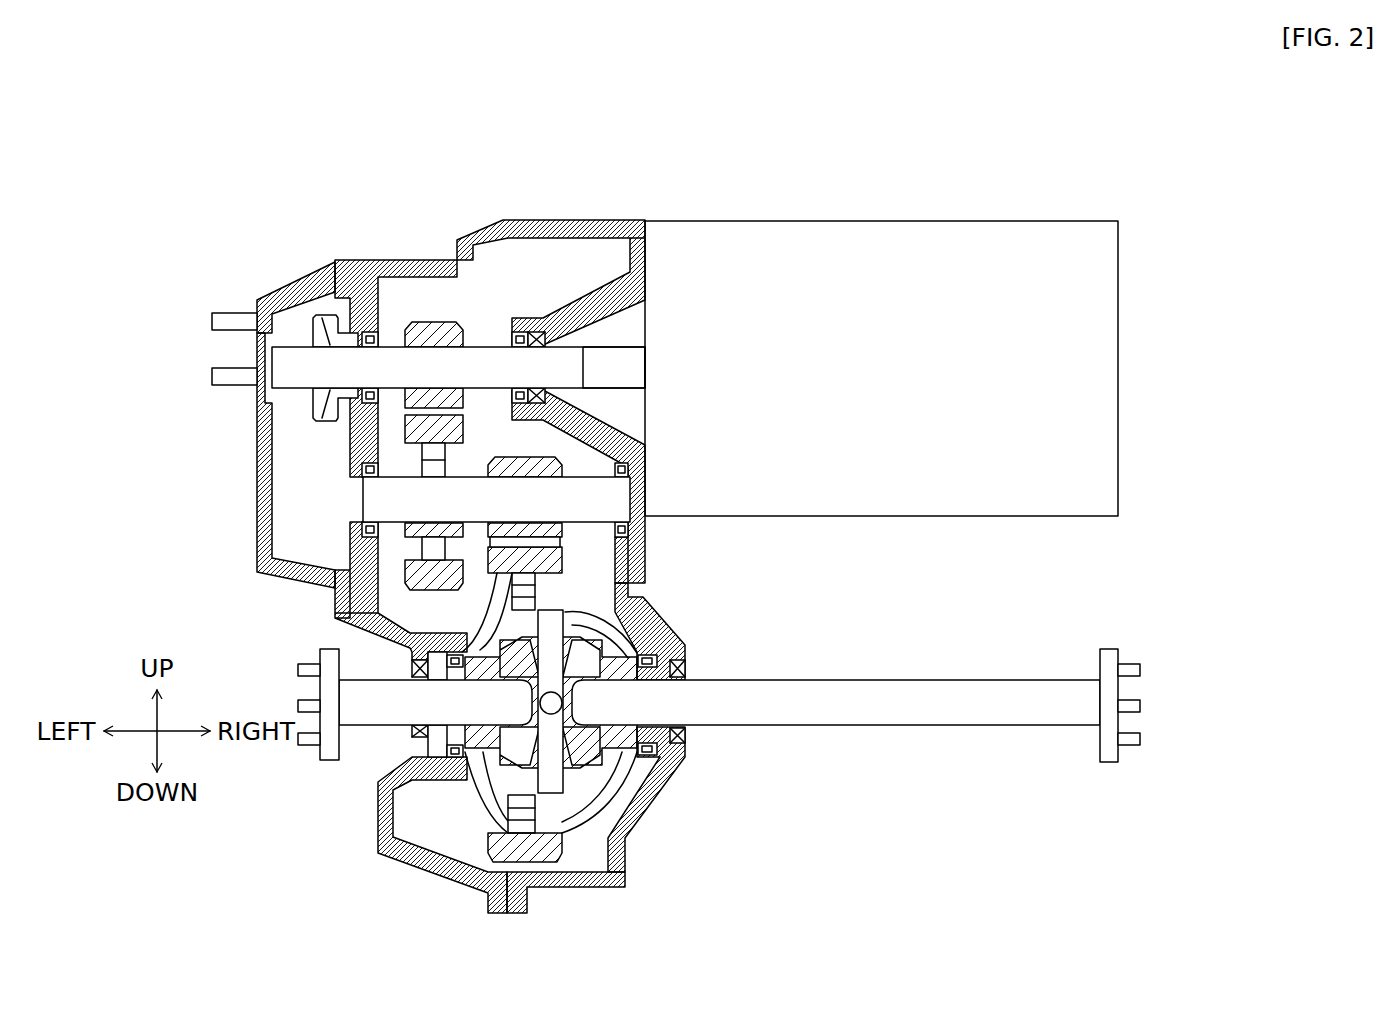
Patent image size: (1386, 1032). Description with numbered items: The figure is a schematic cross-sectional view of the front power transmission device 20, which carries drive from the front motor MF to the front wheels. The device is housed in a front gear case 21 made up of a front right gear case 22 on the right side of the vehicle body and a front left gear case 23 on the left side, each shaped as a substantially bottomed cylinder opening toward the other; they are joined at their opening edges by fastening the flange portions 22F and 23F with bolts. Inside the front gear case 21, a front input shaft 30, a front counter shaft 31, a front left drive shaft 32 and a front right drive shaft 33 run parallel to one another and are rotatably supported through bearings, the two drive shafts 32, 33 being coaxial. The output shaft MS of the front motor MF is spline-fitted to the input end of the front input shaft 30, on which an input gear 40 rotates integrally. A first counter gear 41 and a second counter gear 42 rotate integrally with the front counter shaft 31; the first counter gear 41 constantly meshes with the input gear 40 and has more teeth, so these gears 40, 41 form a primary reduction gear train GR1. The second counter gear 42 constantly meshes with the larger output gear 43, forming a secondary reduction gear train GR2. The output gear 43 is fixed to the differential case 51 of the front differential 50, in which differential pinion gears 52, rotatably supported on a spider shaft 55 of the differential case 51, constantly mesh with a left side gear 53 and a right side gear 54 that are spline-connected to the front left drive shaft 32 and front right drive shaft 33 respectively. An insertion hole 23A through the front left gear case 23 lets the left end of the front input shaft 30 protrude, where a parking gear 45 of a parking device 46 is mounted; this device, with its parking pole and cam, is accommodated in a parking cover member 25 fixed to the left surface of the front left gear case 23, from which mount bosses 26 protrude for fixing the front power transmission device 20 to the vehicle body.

The front power transmission device 20 is at (356, 236).
The front gear case 21 is at (482, 213).
The front right gear case 22 is at (548, 216).
The flange portion 22F is at (528, 893).
The front left gear case 23 is at (412, 258).
The insertion hole 23A is at (350, 332).
The flange portion 23F is at (487, 893).
The parking cover member 25 is at (257, 499).
The mount bosses 26 is at (230, 322).
The front input shaft 30 is at (497, 367).
The front counter shaft 31 is at (595, 497).
The front left drive shaft 32 is at (400, 710).
The front right drive shaft 33 is at (792, 712).
The input gear 40 is at (420, 340).
The first counter gear 41 is at (427, 573).
The second counter gear 42 is at (513, 476).
The output gear 43 is at (540, 573).
The parking gear 45 is at (312, 398).
The parking device 46 is at (273, 297).
The front differential 50 is at (604, 614).
The differential case 51 is at (653, 633).
The differential pinion gears 52 is at (483, 650).
The left side gear 53 is at (487, 748).
The right side gear 54 is at (638, 790).
The spider shaft 55 is at (549, 779).
The primary reduction gear train GR1 is at (466, 412).
The secondary reduction gear train GR2 is at (571, 547).
The output shaft MS is at (613, 360).
The front motor MF is at (867, 381).